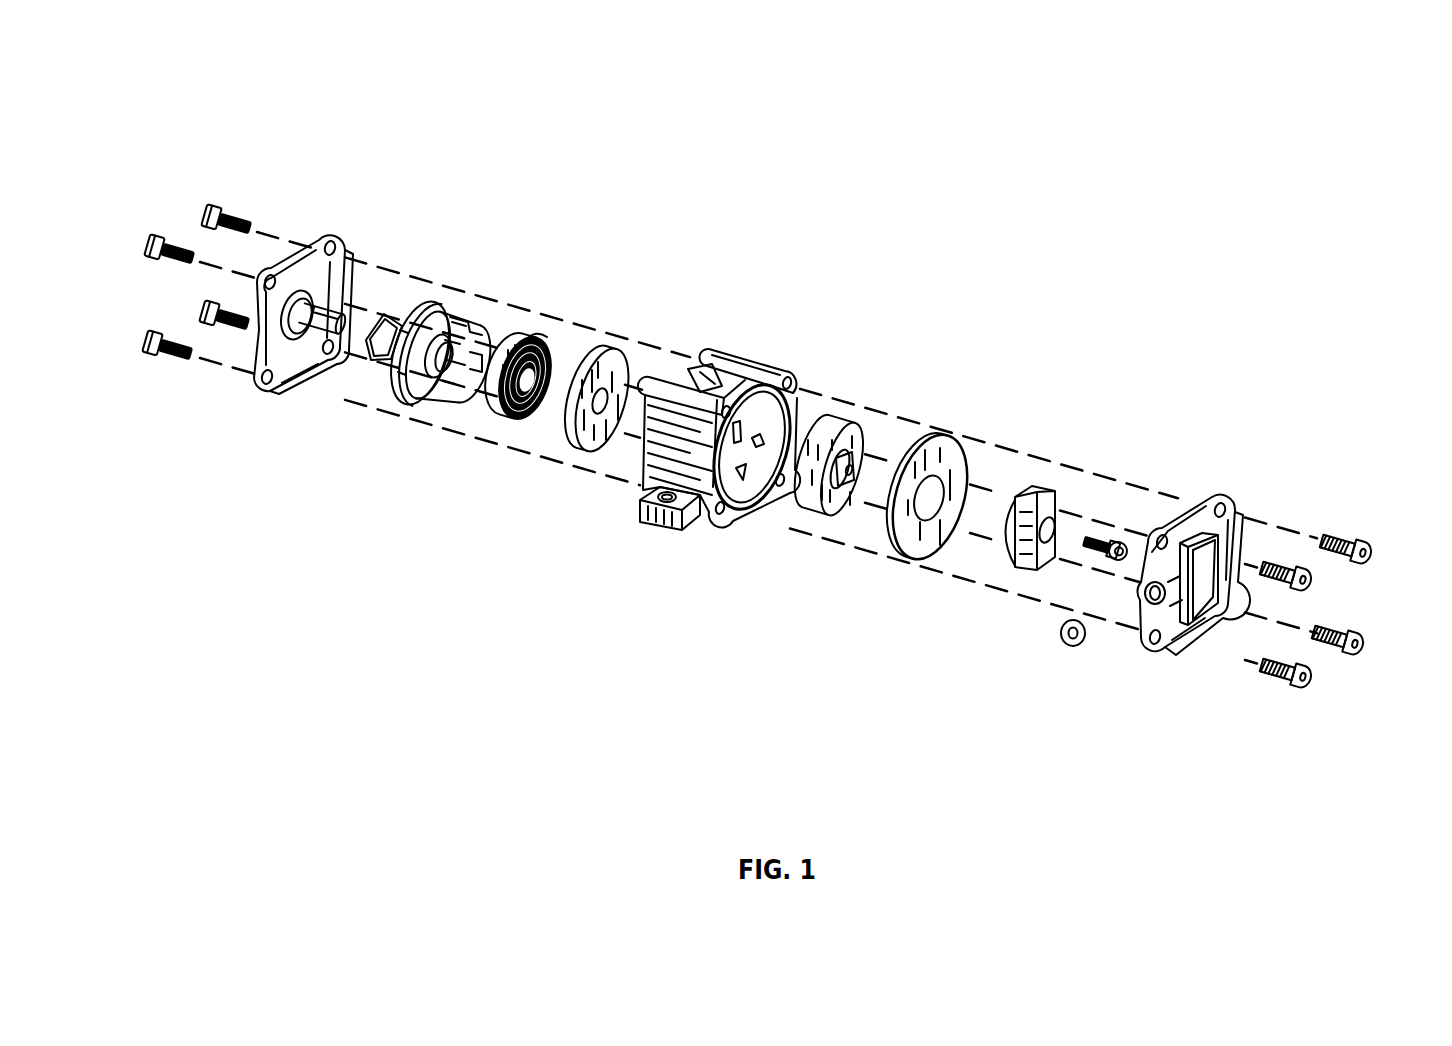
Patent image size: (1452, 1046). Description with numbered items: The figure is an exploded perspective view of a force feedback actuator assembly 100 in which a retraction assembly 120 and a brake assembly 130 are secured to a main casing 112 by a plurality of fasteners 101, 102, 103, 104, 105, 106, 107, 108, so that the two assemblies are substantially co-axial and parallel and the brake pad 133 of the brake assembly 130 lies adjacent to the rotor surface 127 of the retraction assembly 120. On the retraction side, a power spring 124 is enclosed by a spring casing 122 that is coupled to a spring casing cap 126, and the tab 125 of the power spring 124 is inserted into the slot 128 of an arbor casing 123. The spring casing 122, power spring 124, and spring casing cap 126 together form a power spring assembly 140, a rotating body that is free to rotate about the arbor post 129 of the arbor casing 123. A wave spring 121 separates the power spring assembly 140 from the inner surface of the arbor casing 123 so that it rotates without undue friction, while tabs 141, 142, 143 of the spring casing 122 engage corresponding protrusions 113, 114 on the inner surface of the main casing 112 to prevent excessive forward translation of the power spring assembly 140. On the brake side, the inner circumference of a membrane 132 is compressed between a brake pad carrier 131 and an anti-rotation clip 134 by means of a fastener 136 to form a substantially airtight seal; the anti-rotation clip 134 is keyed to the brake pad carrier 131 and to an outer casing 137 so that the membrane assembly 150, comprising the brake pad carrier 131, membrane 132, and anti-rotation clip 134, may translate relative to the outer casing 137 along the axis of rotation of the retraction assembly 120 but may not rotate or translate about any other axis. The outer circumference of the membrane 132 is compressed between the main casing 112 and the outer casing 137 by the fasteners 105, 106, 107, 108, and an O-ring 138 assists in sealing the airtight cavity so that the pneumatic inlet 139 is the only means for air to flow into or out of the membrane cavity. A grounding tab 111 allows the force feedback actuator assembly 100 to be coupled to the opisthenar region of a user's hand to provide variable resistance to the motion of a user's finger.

The force feedback actuator assembly 100 is at (1121, 86).
The fastener 101 is at (200, 208).
The fastener 102 is at (147, 243).
The fastener 103 is at (143, 343).
The fastener 104 is at (197, 310).
The fastener 105 is at (1375, 556).
The fastener 106 is at (1315, 582).
The fastener 107 is at (1366, 647).
The fastener 108 is at (1314, 680).
The grounding tab 111 is at (750, 437).
The main casing 112 is at (743, 350).
The protrusion 113 is at (740, 502).
The protrusion 114 is at (760, 438).
The retraction assembly 120 is at (333, 152).
The wave spring 121 is at (373, 370).
The spring casing 122 is at (484, 336).
The arbor casing 123 is at (331, 302).
The power spring 124 is at (523, 340).
The tab 125 is at (619, 393).
The spring casing cap 126 is at (567, 441).
The rotor surface 127 is at (616, 374).
The slot 128 is at (341, 308).
The arbor post 129 is at (297, 370).
The brake assembly 130 is at (883, 357).
The brake pad carrier 131 is at (835, 492).
The membrane 132 is at (960, 445).
The brake pad 133 is at (793, 503).
The anti-rotation clip 134 is at (1023, 570).
The fastener 136 is at (1115, 527).
The outer casing 137 is at (1163, 631).
The O-ring 138 is at (1072, 646).
The pneumatic inlet 139 is at (1150, 602).
The power spring assembly 140 is at (502, 461).
The tab 141 is at (447, 400).
The tab 142 is at (460, 313).
The tab 143 is at (483, 343).
The membrane assembly 150 is at (939, 602).